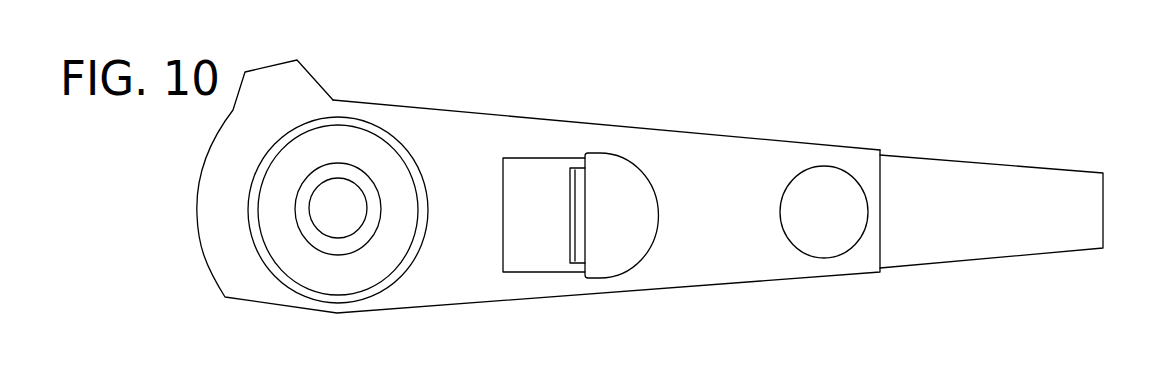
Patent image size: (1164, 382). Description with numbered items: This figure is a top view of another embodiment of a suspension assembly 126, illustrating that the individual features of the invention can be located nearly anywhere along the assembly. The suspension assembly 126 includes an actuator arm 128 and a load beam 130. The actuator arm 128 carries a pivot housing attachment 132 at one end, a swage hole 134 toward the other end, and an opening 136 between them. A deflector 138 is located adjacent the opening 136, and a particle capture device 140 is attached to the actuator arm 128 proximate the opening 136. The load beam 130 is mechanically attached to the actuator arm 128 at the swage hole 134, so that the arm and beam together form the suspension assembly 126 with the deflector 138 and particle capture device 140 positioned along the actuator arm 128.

The suspension assembly 126 is at (677, 76).
The actuator arm 128 is at (750, 143).
The load beam 130 is at (958, 172).
The pivot housing attachment 132 is at (353, 117).
The swage hole 134 is at (828, 166).
The opening 136 is at (515, 170).
The deflector 138 is at (580, 173).
The particle capture device 140 is at (617, 156).